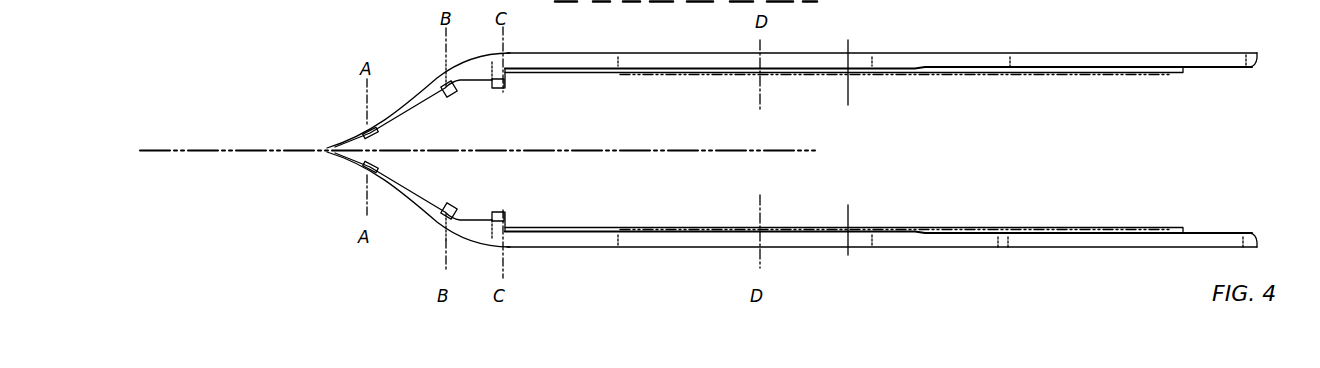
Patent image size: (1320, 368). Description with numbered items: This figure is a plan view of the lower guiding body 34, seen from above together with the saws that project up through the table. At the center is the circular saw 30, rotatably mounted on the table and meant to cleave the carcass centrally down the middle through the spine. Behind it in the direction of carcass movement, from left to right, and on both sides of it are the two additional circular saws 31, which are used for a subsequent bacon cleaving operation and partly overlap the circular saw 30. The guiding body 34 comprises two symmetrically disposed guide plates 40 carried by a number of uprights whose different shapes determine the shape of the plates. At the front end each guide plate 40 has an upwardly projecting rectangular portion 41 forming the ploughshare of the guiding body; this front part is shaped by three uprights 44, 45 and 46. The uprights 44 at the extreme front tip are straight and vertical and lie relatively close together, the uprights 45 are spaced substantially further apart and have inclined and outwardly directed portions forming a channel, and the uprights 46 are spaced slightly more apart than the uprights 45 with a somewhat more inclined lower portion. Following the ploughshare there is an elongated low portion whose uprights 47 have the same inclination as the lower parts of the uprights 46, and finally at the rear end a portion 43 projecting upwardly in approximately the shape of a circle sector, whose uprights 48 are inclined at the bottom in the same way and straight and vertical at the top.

The circular saw 30 is at (785, 148).
The additional circular saws 31 is at (1100, 75).
The guiding body 34 is at (928, 50).
The guide plates 40 is at (562, 54).
The rectangular portion 41 is at (473, 63).
The rear portion 43 is at (1185, 58).
The uprights 44 is at (371, 132).
The uprights 45 is at (452, 97).
The uprights 46 is at (501, 89).
The uprights 47 is at (644, 63).
The uprights 48 is at (996, 64).